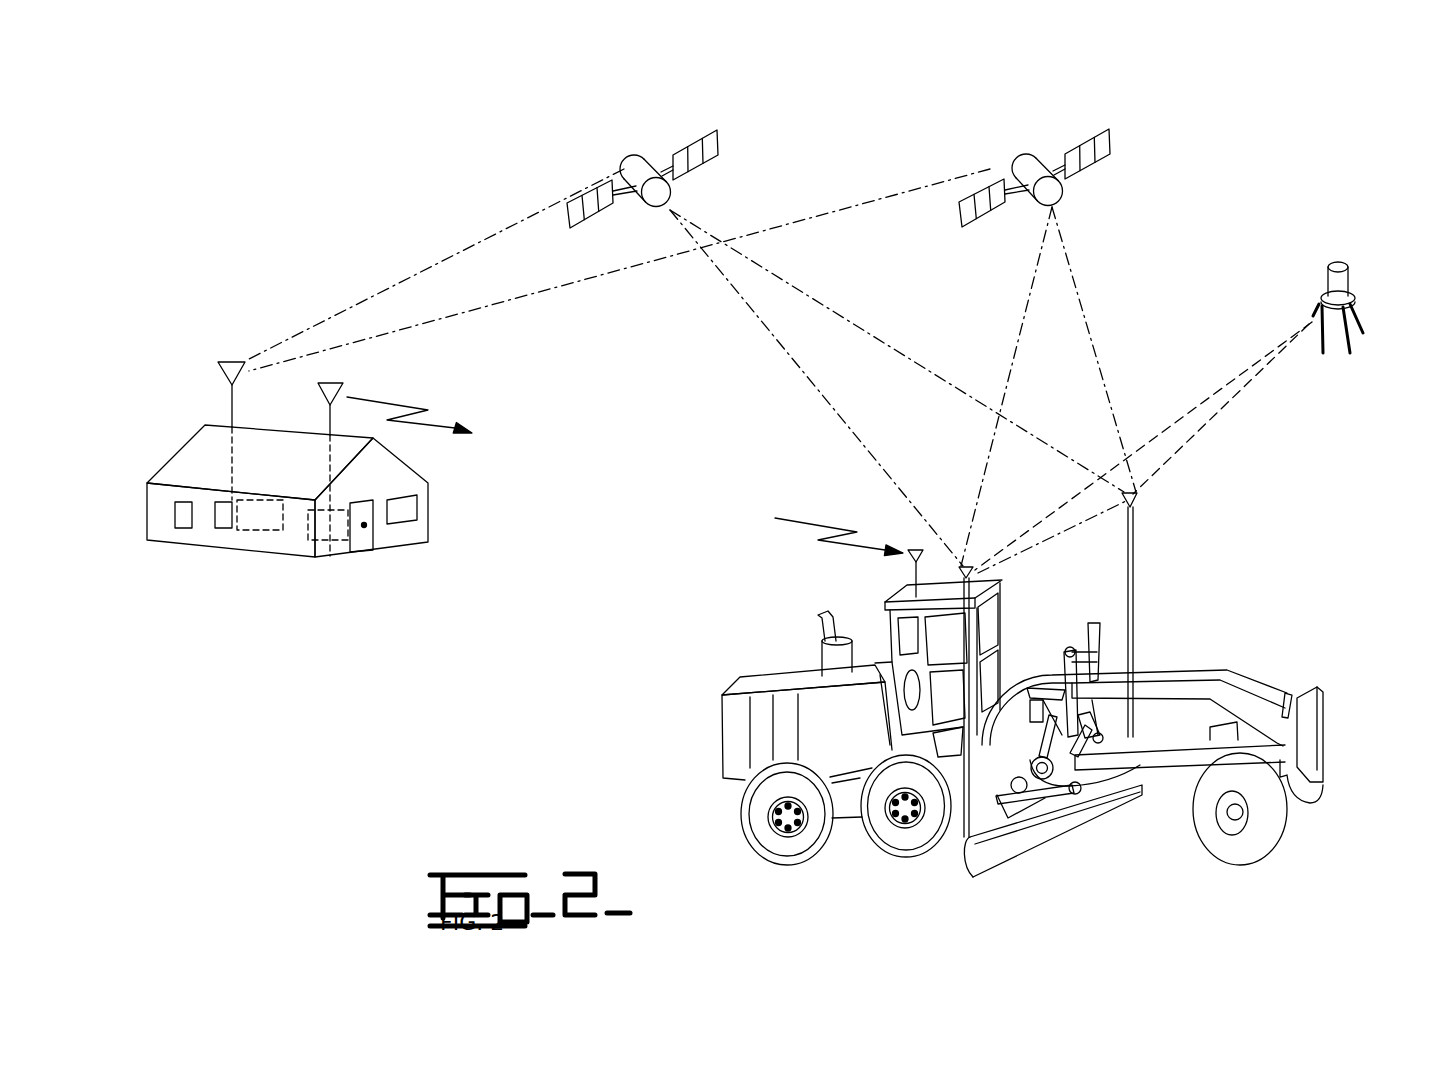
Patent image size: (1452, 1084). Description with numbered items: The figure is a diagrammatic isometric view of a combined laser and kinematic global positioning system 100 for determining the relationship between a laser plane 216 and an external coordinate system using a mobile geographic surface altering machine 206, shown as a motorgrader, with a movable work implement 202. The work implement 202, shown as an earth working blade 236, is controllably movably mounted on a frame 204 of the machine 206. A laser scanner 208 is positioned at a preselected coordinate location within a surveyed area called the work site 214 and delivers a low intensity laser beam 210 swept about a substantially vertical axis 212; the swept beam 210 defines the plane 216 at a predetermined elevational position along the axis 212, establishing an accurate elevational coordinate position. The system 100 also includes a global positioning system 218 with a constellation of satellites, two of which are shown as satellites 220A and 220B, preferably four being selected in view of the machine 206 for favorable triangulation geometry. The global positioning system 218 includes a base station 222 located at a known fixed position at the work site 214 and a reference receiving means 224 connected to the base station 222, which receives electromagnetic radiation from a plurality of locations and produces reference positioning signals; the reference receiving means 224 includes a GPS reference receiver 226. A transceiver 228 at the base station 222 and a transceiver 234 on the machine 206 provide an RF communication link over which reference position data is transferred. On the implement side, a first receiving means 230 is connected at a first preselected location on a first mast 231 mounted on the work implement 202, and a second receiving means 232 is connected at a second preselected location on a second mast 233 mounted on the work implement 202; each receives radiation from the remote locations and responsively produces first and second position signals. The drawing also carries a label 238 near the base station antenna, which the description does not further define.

The system 100 is at (520, 790).
The work implement 202 is at (1107, 705).
The frame 204 is at (1273, 688).
The geographic surface altering machine 206 is at (940, 691).
The laser scanner 208 is at (1318, 276).
The laser beam 210 is at (1237, 397).
The vertical axis 212 is at (1345, 260).
The work site 214 is at (650, 611).
The laser plane 216 is at (1157, 470).
The global positioning system 218 is at (484, 612).
The satellite 220A is at (635, 162).
The satellite 220B is at (1022, 158).
The base station 222 is at (327, 474).
The reference receiving means 224 is at (181, 412).
The GPS reference receiver 226 is at (243, 533).
The transceiver 228 is at (366, 365).
The first receiving means 230 is at (951, 829).
The first mast 231 is at (918, 742).
The second receiving means 232 is at (1153, 731).
The second mast 233 is at (1133, 598).
The transceiver 234 is at (891, 573).
The earth working blade 236 is at (1008, 845).
The base GPS antenna 238 is at (232, 362).